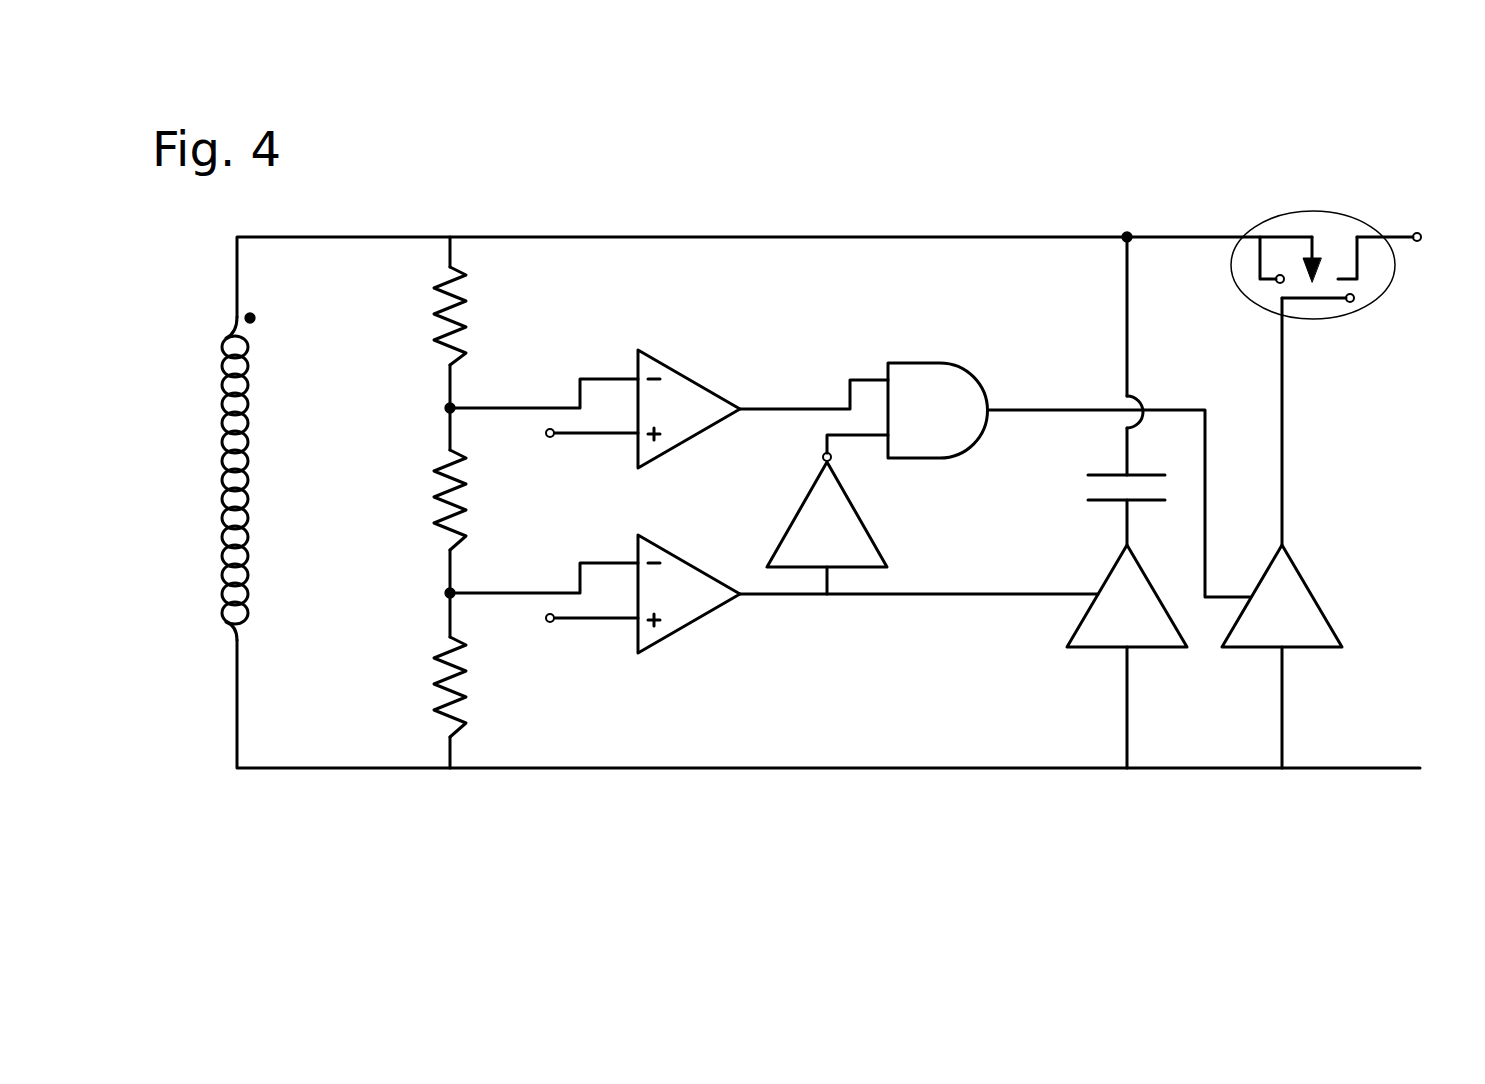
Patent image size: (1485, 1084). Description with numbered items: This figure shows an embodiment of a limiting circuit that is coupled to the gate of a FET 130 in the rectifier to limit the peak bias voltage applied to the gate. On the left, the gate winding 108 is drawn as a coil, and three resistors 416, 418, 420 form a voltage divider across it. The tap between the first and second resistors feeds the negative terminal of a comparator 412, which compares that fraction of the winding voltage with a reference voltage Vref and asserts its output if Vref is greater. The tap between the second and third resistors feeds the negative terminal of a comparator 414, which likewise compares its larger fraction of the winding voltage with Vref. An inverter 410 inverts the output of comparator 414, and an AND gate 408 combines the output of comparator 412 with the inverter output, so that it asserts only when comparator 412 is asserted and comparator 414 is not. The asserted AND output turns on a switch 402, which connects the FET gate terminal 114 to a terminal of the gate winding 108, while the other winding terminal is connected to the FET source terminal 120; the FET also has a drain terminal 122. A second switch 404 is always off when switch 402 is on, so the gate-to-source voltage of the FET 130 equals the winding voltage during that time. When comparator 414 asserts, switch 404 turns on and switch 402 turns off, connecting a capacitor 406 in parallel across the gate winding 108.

The gate winding 108 is at (246, 418).
The FET gate terminal 114 is at (1355, 301).
The FET source terminal 120 is at (1277, 284).
The FET drain terminal 122 is at (1422, 240).
The FET 130 is at (1310, 211).
The switch 402 is at (1312, 650).
The switch 404 is at (1155, 650).
The capacitor 406 is at (1110, 472).
The AND gate 408 is at (935, 462).
The inverter 410 is at (858, 526).
The comparator 412 is at (700, 370).
The comparator 414 is at (690, 630).
The resistor 416 is at (470, 306).
The resistor 418 is at (470, 489).
The resistor 420 is at (470, 674).